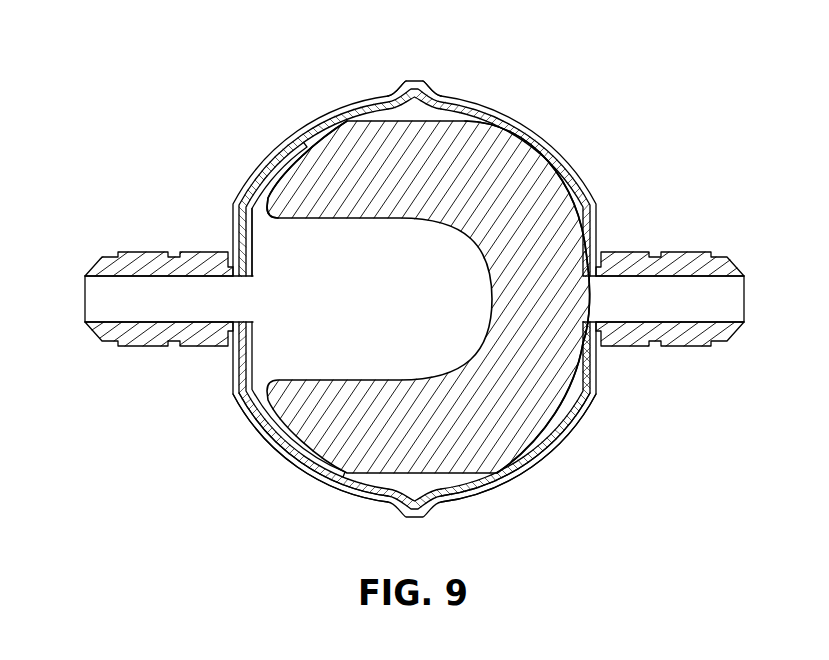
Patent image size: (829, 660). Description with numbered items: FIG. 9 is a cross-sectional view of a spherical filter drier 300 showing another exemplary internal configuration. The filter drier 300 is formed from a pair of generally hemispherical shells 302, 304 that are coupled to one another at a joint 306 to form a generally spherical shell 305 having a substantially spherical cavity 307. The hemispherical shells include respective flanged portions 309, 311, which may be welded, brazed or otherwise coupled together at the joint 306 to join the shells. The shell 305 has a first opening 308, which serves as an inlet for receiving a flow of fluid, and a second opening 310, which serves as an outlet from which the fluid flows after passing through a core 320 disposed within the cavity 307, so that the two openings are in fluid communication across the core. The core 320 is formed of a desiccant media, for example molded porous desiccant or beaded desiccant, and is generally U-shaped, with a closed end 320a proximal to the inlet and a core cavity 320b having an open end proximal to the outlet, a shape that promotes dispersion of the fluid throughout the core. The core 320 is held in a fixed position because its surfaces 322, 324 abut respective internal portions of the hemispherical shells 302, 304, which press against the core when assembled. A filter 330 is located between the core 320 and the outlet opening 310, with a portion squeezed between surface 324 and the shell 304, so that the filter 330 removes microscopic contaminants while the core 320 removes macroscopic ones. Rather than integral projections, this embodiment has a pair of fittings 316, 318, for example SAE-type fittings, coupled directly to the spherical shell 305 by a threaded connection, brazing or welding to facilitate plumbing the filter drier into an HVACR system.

The filter drier 300 is at (413, 288).
The hemispherical shell 302 is at (585, 188).
The hemispherical shell 304 is at (303, 147).
The spherical shell 305 is at (333, 512).
The joint 306 is at (413, 79).
The spherical cavity 307 is at (403, 115).
The first opening 308 is at (592, 307).
The flanged portion 309 is at (418, 90).
The second opening 310 is at (233, 307).
The flanged portion 311 is at (405, 87).
The fitting 316 is at (673, 260).
The fitting 318 is at (152, 262).
The core 320 is at (307, 422).
The closed end of core 320a is at (573, 383).
The core cavity 320b is at (288, 362).
The surface of core 322 is at (537, 447).
The surface of core 324 is at (310, 440).
The filter 330 is at (247, 207).